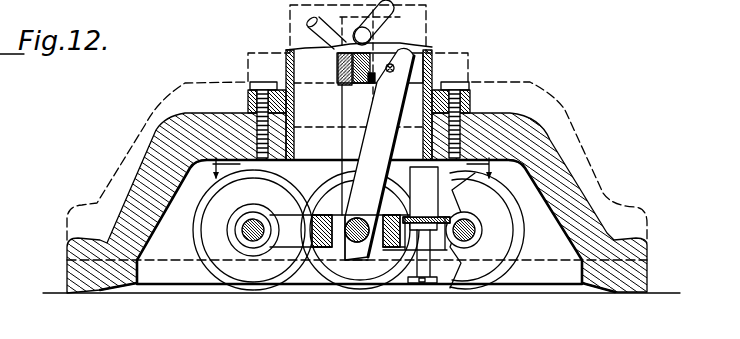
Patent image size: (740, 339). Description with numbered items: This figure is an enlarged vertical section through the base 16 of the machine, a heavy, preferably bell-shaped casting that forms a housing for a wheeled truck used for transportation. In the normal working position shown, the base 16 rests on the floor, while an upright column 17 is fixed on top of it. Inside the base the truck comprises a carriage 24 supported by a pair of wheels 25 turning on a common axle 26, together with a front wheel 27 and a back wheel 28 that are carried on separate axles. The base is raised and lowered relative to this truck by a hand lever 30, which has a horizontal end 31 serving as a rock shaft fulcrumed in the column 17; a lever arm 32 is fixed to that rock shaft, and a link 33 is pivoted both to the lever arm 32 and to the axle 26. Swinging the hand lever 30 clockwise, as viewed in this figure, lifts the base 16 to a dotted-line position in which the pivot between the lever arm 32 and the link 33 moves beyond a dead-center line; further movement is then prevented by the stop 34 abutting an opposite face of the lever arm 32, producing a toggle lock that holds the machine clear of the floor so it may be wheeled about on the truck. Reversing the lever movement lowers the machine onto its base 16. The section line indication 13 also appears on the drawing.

The section line 13 is at (353, 172).
The base 16 is at (651, 277).
The upright column 17 is at (433, 70).
The carriage 24 is at (327, 249).
The pair of wheels 25 is at (381, 278).
The common axle 26 is at (357, 224).
The front wheel 27 is at (224, 281).
The back wheel 28 is at (500, 287).
The hand lever 30 is at (308, 24).
The horizontal end 31 is at (355, 85).
The lever arm 32 is at (380, 60).
The link 33 is at (433, 51).
The stop 34 is at (391, 103).